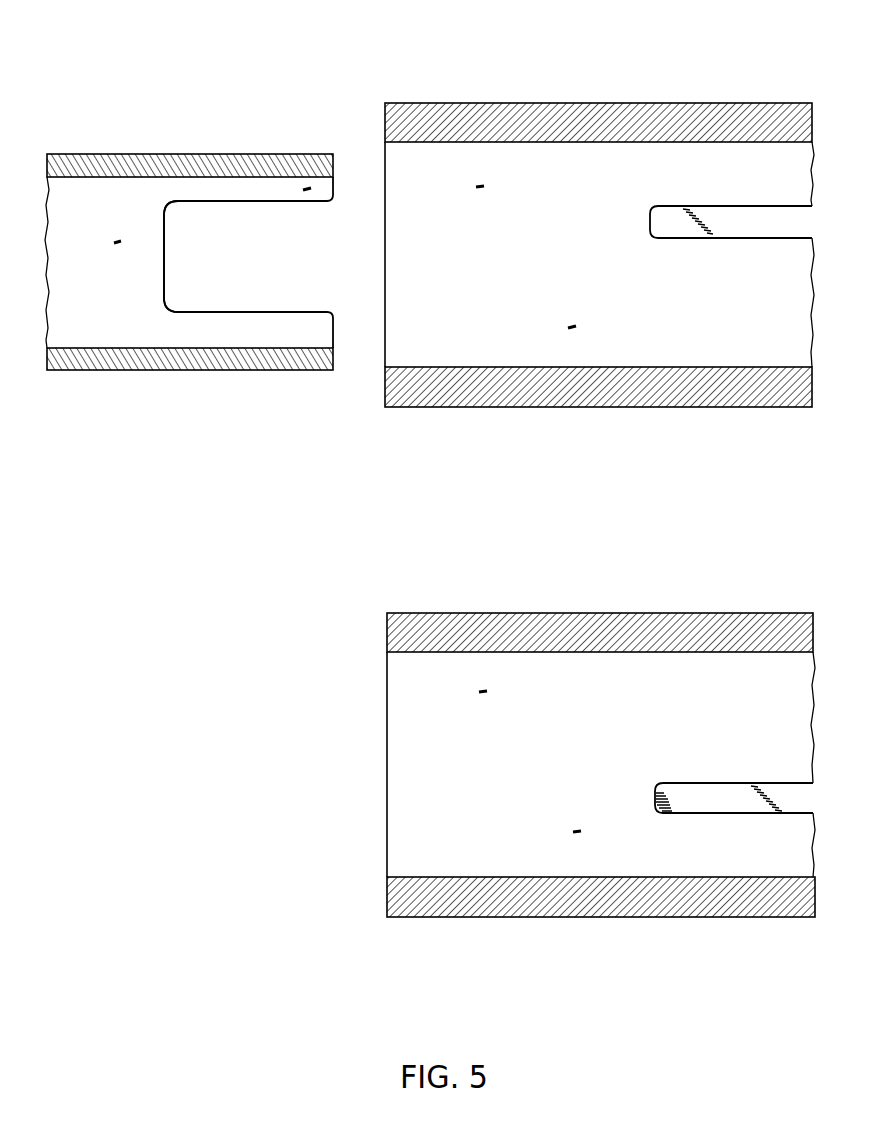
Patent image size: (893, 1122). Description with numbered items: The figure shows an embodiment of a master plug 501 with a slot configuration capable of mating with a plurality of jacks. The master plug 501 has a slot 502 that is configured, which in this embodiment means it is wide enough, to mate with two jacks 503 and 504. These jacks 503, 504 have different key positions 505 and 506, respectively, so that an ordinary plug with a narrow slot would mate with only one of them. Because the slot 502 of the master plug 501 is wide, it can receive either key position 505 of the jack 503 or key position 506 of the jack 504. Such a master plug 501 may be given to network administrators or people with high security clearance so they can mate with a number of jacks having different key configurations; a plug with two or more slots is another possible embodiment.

The master plug 501 is at (109, 118).
The slot 502 is at (260, 259).
The jack 503 is at (675, 76).
The jack 504 is at (700, 585).
The key position 505 is at (742, 205).
The key position 506 is at (722, 782).